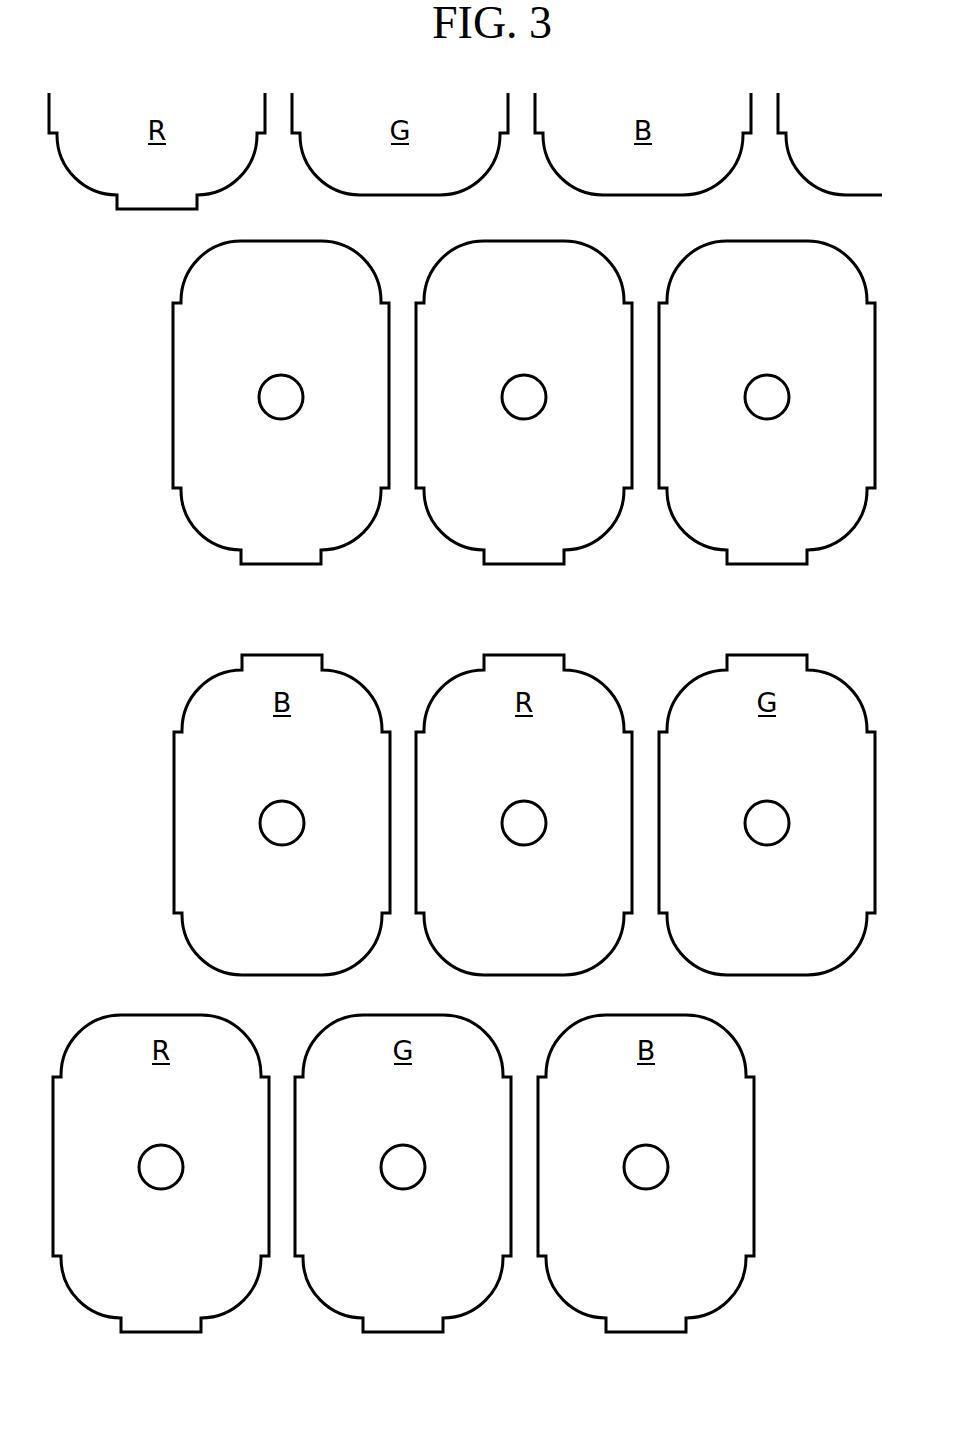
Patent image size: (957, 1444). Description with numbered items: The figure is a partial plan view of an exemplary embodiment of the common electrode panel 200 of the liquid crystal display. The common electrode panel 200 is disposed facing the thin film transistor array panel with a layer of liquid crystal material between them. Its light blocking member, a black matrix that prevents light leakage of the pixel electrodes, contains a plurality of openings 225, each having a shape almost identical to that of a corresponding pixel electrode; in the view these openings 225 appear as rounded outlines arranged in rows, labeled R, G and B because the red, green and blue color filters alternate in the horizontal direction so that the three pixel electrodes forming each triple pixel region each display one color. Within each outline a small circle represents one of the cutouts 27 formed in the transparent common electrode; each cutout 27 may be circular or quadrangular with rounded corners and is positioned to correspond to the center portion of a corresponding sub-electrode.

The opening 225 is at (194, 411).
The cutout 27 is at (303, 384).
The common electrode panel 200 is at (390, 447).